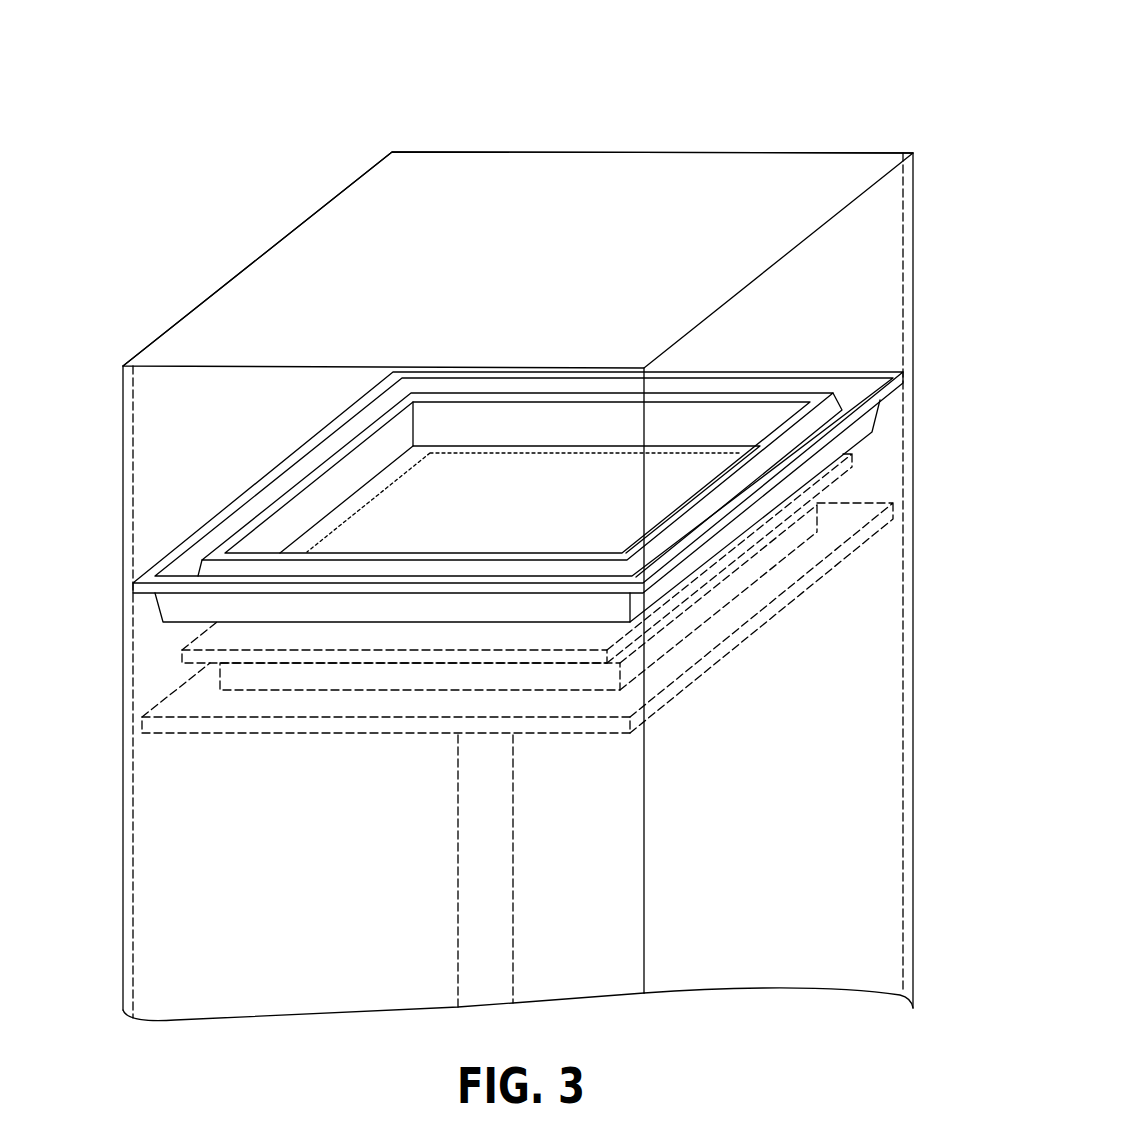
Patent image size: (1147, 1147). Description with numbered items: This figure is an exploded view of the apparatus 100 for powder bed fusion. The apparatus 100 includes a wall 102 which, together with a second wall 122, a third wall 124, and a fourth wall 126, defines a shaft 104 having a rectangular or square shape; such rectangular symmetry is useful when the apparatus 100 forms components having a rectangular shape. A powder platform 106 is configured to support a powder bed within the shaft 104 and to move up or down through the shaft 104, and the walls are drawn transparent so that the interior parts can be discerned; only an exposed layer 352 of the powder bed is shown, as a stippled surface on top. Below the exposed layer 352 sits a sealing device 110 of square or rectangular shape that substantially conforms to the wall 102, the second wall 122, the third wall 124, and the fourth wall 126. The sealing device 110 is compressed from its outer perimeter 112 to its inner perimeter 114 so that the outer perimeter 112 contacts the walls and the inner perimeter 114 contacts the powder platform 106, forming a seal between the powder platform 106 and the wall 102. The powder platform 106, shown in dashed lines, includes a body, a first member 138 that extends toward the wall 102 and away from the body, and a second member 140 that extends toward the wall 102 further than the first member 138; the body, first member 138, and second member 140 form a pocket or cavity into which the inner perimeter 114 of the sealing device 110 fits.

The apparatus 100 is at (772, 95).
The wall 102 is at (892, 357).
The shaft 104 is at (840, 829).
The powder platform 106 is at (460, 532).
The sealing device 110 is at (322, 600).
The outer perimeter 112 is at (262, 488).
The inner perimeter 114 is at (320, 468).
The second wall 122 is at (634, 858).
The third wall 124 is at (122, 483).
The fourth wall 126 is at (692, 153).
The first member 138 is at (718, 563).
The second member 140 is at (817, 575).
The exposed layer 352 is at (540, 160).